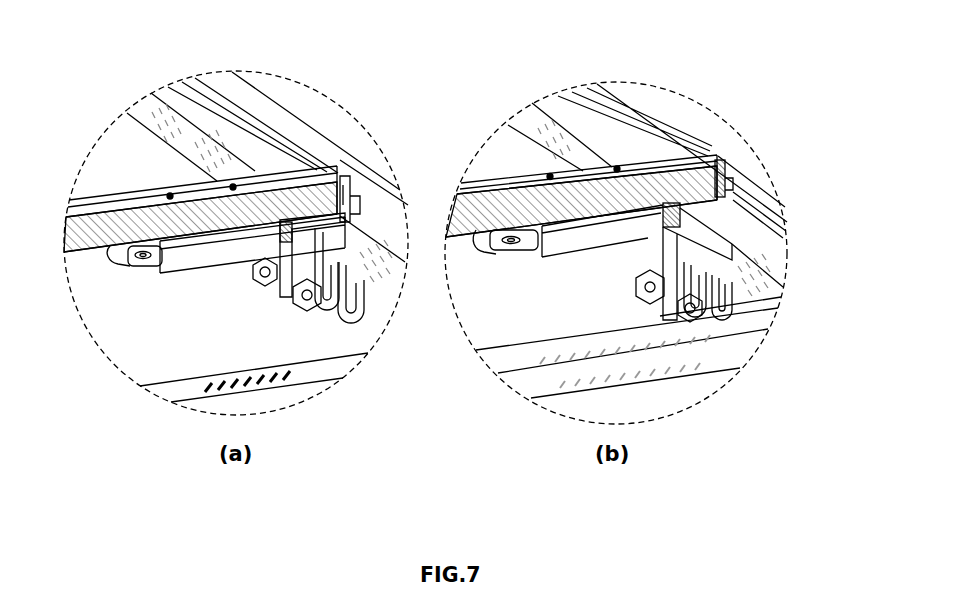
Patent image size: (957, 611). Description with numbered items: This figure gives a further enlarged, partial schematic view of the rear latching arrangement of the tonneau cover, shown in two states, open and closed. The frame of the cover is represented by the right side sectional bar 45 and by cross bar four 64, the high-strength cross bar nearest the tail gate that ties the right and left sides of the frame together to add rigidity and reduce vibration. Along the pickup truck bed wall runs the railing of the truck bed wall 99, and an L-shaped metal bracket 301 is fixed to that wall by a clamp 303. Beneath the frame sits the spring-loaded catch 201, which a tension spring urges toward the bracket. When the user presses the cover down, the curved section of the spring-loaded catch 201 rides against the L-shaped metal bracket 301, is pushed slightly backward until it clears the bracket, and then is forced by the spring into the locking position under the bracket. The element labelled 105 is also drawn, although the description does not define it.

The right side sectional bar 45 is at (290, 122).
The railing of the truck bed wall 99 is at (195, 137).
The cross bar four 64 is at (103, 228).
The L-shaped metal bracket 301 is at (345, 208).
The mounting clip 105 is at (106, 252).
The spring-loaded catch 201 is at (258, 258).
The clamp 303 is at (288, 293).